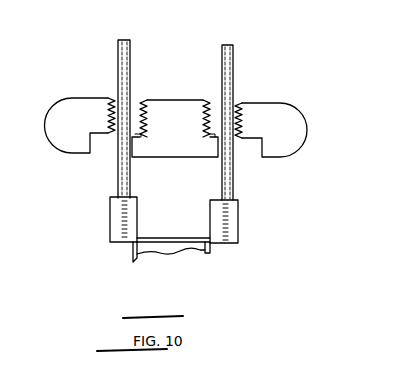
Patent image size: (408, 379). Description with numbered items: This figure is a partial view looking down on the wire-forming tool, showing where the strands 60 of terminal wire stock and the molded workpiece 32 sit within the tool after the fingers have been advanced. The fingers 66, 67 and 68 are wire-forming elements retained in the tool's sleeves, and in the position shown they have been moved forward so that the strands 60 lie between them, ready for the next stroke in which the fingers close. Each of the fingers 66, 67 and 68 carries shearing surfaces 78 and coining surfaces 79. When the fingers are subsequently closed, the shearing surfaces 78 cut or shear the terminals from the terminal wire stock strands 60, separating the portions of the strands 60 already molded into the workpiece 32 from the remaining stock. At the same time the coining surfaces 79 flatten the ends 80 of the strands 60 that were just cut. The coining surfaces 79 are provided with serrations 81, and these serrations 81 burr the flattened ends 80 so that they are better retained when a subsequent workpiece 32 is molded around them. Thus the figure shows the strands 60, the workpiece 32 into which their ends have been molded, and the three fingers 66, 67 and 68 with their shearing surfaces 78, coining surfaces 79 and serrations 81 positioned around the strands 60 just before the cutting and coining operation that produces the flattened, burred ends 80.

The strands of terminal wire stock 60 is at (130, 48).
The finger 66 is at (60, 145).
The finger 67 is at (163, 100).
The finger 68 is at (305, 125).
The serrations 81 is at (108, 118).
The coining surfaces 79 is at (110, 98).
The shearing surfaces 78 is at (98, 140).
The flattened ends 80 is at (122, 213).
The workpiece 32 is at (150, 240).